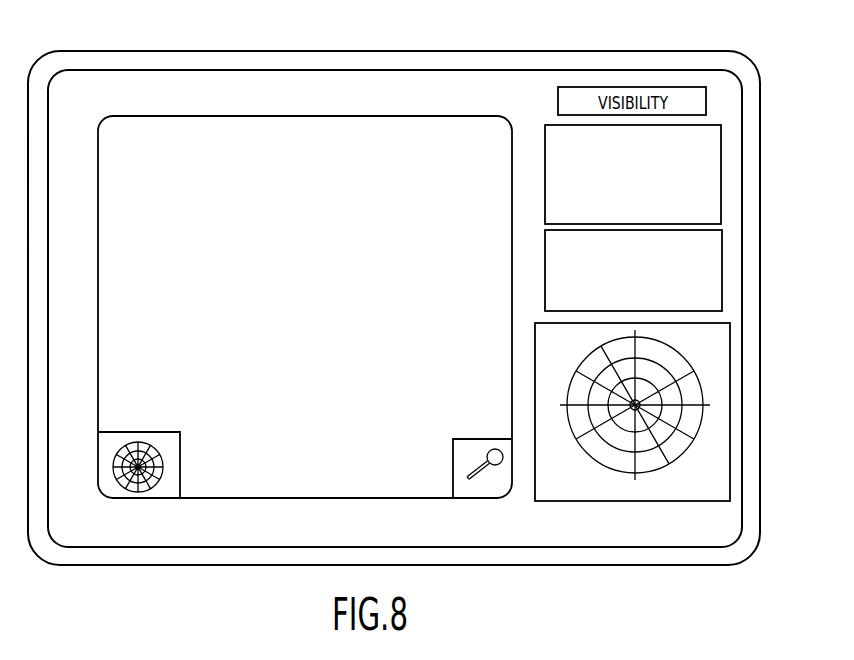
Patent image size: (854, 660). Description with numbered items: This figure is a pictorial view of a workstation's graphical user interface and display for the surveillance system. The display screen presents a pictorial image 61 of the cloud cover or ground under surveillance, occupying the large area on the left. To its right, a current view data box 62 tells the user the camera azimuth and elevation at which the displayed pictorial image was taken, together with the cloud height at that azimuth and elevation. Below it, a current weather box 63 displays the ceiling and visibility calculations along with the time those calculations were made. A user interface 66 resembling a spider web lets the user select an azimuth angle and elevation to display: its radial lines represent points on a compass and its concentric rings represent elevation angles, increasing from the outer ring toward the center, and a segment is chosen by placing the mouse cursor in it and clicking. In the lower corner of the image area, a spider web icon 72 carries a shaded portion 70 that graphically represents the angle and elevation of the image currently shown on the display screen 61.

The pictorial image 61 is at (312, 282).
The current view data box 62 is at (713, 172).
The current weather box 63 is at (712, 279).
The user interface 66 is at (725, 413).
The shaded portion 70 is at (139, 462).
The spider web icon 72 is at (163, 458).